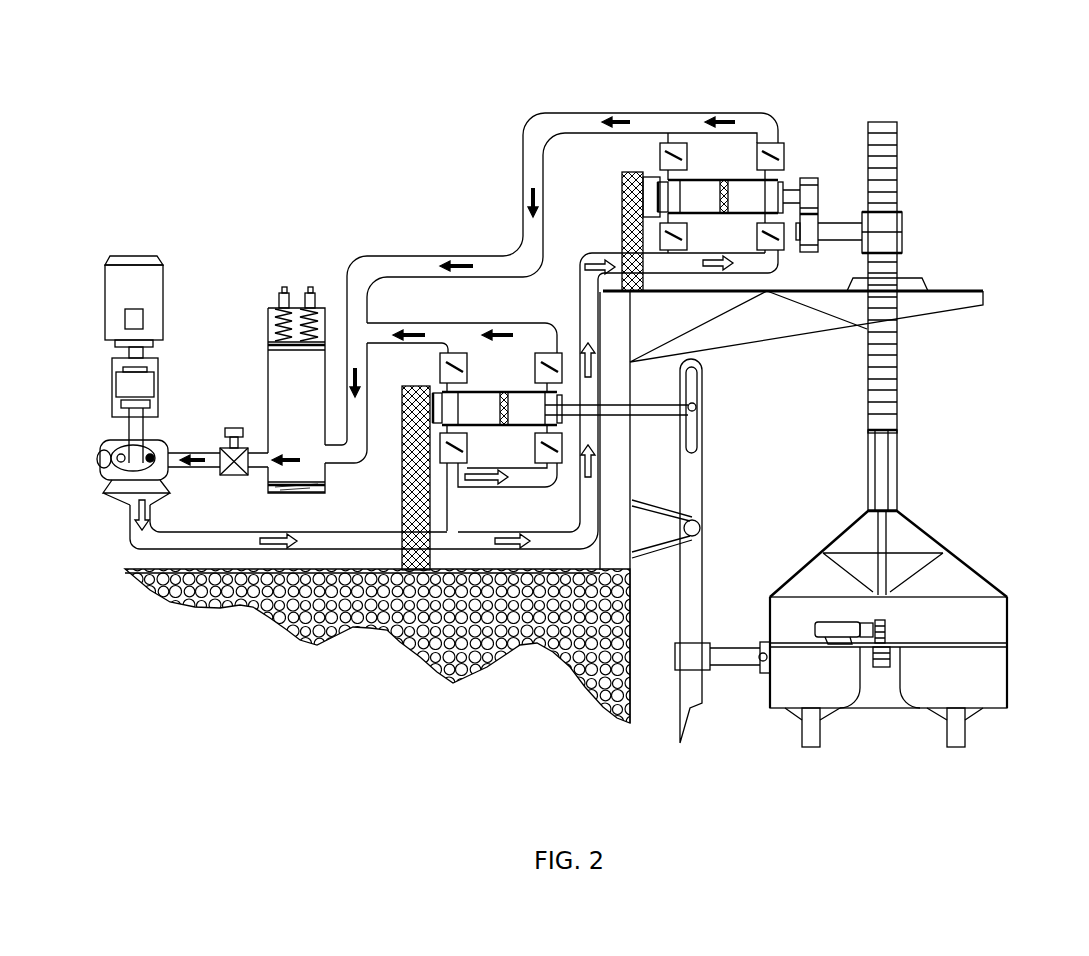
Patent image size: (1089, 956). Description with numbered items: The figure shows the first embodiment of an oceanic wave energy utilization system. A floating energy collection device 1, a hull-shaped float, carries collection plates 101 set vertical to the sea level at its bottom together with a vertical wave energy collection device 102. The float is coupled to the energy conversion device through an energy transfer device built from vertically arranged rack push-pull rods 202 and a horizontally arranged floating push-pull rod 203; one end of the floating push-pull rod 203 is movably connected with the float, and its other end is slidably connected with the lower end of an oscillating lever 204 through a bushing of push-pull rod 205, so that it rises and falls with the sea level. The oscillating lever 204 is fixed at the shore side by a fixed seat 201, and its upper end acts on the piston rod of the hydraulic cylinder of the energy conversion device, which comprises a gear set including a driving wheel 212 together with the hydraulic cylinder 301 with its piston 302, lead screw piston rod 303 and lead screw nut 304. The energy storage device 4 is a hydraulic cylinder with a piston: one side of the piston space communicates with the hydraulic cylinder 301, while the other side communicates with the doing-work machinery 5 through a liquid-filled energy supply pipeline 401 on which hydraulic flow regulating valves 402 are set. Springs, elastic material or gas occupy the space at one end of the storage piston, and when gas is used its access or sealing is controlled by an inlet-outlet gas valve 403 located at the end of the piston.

The floating energy collection device 1 is at (947, 623).
The collection plate 101 is at (957, 720).
The vertical wave energy collection device 102 is at (885, 633).
The fixed seat 201 is at (665, 510).
The rack push-pull rod 202 is at (882, 365).
The floating push-pull rod 203 is at (743, 658).
The oscillating lever 204 is at (692, 570).
The bushing of push-pull rod 205 is at (690, 658).
The driving wheel 212 is at (880, 233).
The hydraulic cylinder 301 is at (720, 178).
The piston 302 is at (730, 180).
The lead screw piston rod 303 is at (765, 198).
The lead screw nut 304 is at (810, 180).
The energy storage device 4 is at (330, 320).
The energy supply pipeline 401 is at (180, 453).
The hydraulic flow regulating valve 402 is at (233, 432).
The inlet-outlet gas valve 403 is at (283, 302).
The doing-work machinery 5 is at (133, 277).